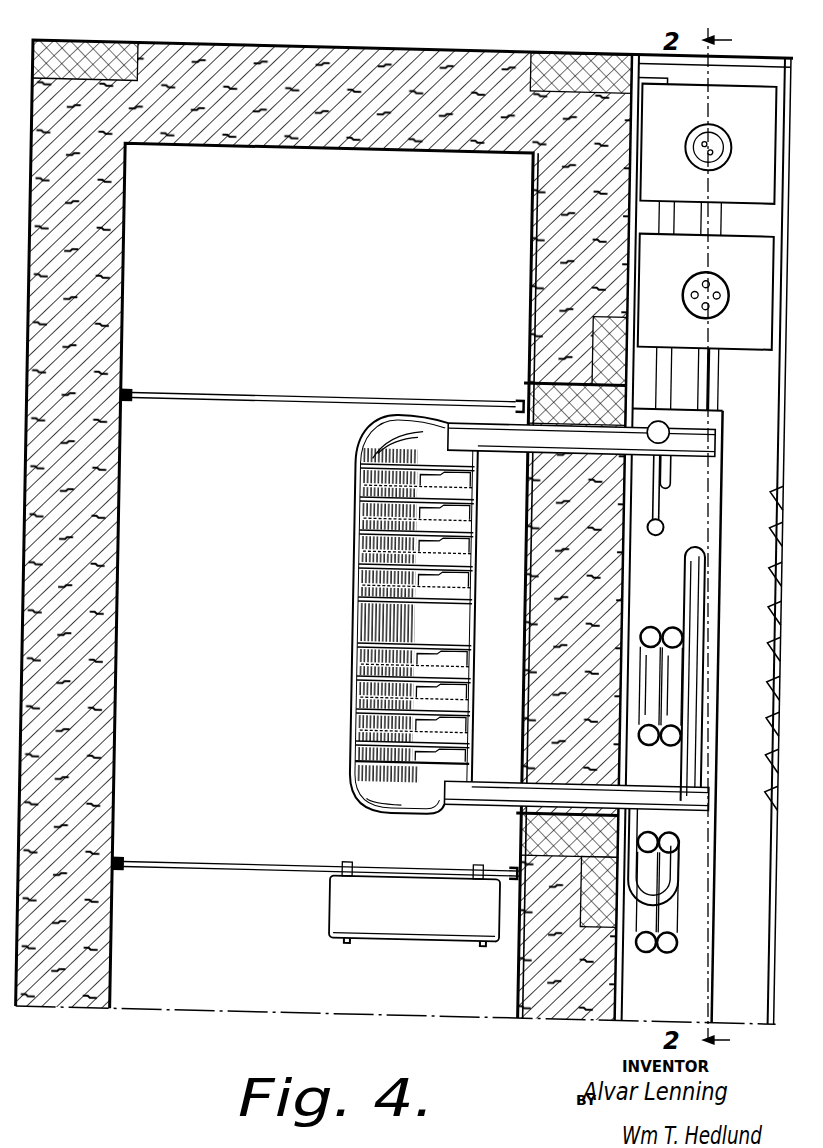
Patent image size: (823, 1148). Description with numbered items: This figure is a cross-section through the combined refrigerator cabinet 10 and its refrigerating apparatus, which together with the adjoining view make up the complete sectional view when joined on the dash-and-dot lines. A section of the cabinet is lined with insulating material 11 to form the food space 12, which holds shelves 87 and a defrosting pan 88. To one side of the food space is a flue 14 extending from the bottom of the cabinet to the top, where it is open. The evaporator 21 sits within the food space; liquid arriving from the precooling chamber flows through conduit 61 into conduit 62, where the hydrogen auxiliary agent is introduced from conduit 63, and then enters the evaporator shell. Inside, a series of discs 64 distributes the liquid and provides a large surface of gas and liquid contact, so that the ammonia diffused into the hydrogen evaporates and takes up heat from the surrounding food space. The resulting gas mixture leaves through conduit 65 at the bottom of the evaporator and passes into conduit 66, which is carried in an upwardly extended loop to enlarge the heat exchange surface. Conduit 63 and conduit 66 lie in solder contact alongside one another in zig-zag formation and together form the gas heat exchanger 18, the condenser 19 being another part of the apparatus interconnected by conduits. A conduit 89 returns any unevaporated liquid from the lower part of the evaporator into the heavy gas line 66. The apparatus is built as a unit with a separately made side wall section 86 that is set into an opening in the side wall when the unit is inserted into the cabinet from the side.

The refrigerator cabinet 10 is at (29, 51).
The insulating material 11 is at (128, 293).
The food space 12 is at (372, 615).
The flue 14 is at (706, 540).
The gas heat exchanger 18 is at (679, 901).
The condenser 19 is at (724, 261).
The evaporator 21 is at (362, 511).
The conduit 61 is at (681, 464).
The conduit 62 is at (505, 414).
The conduit 63 is at (666, 491).
The discs 64 is at (437, 583).
The conduit 65 is at (511, 802).
The conduit 66 is at (692, 568).
The side wall section 86 is at (537, 539).
The shelves 87 is at (325, 393).
The defrosting pan 88 is at (460, 915).
The conduit 89 is at (697, 876).